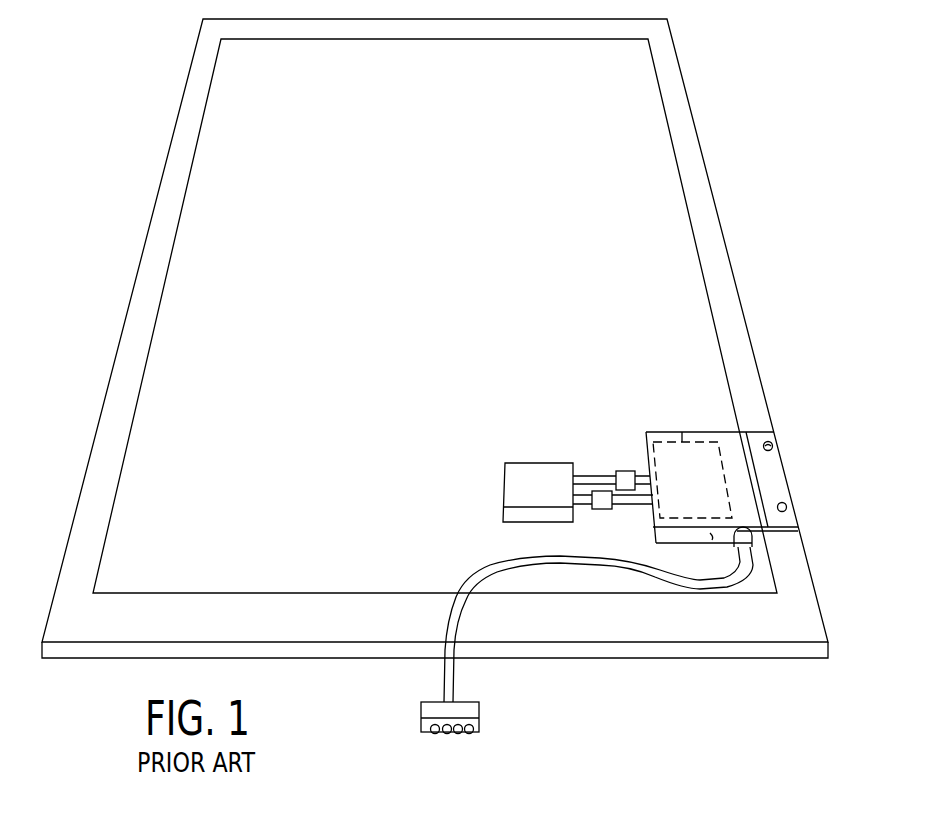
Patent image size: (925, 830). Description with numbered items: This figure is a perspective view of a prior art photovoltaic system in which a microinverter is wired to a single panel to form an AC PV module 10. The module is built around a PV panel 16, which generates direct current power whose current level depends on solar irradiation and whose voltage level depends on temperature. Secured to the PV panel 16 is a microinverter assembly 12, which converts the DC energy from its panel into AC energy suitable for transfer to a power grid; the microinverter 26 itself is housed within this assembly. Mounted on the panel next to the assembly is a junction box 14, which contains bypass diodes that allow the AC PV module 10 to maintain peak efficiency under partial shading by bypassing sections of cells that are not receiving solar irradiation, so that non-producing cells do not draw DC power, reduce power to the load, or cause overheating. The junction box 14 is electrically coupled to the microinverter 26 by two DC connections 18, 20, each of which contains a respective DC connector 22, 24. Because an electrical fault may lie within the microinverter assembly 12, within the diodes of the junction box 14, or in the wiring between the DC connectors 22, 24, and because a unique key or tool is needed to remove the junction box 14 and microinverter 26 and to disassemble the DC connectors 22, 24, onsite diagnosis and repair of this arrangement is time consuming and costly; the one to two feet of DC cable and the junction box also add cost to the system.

The AC PV module 10 is at (78, 196).
The microinverter assembly 12 is at (705, 432).
The junction box 14 is at (510, 462).
The PV panel 16 is at (738, 293).
The DC connection 18 is at (634, 504).
The DC connection 20 is at (596, 476).
The DC connector 22 is at (603, 490).
The DC connector 24 is at (626, 471).
The microinverter 26 is at (683, 425).